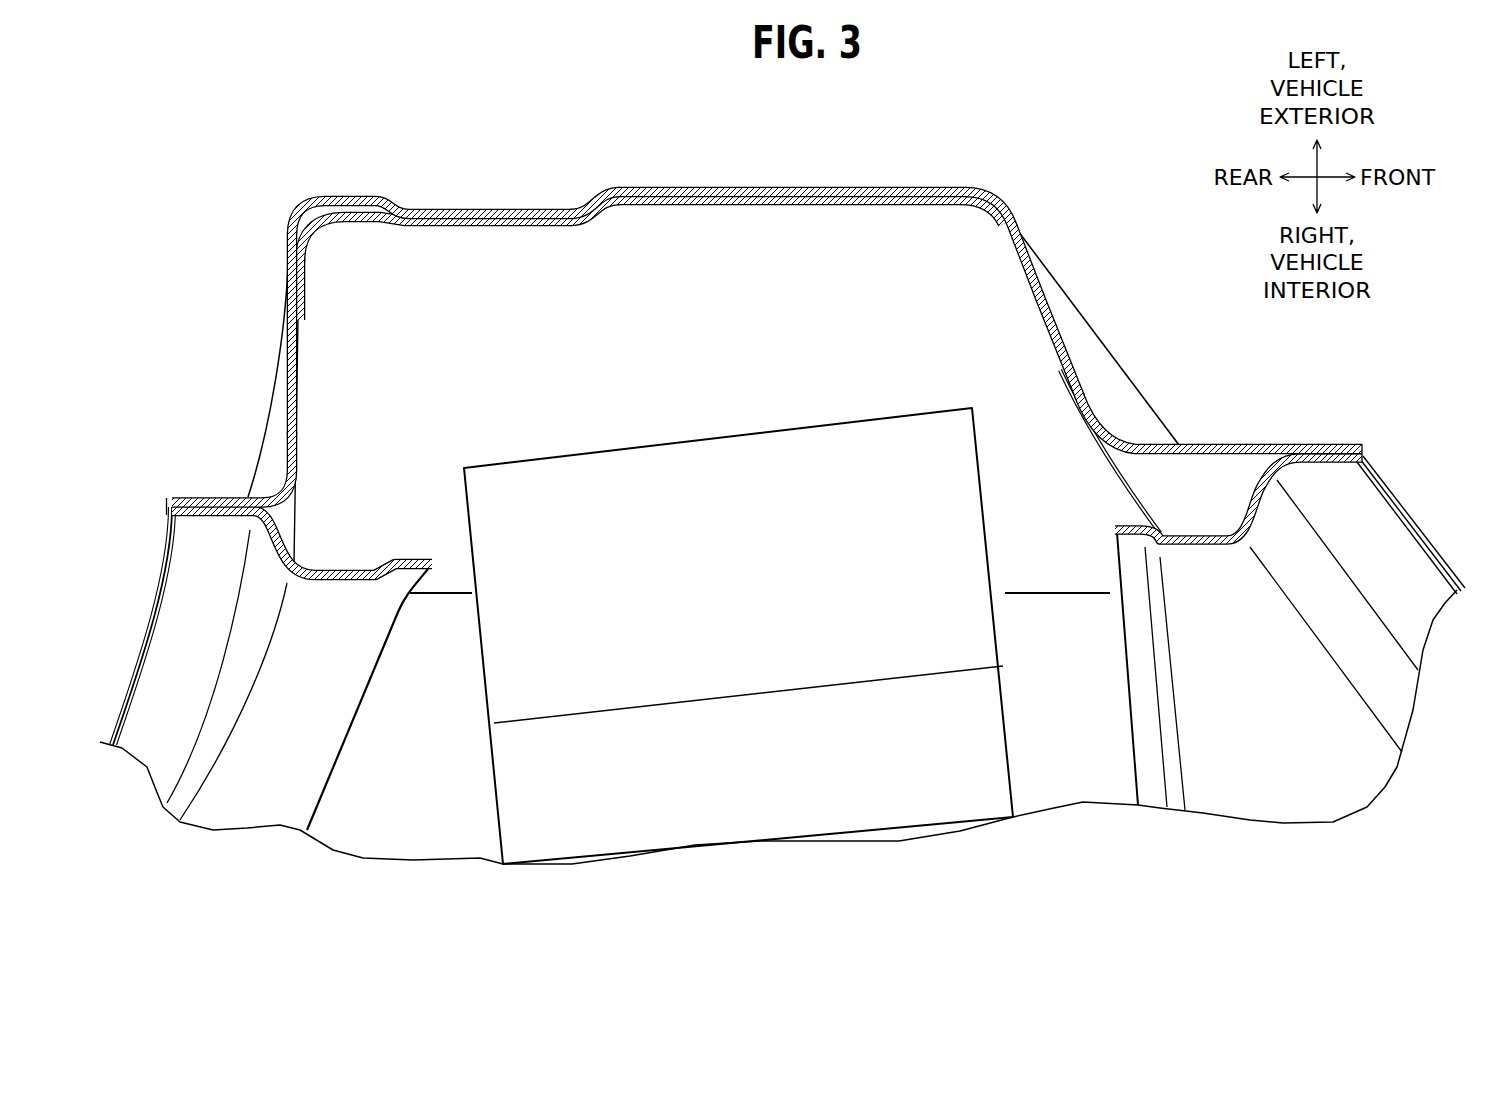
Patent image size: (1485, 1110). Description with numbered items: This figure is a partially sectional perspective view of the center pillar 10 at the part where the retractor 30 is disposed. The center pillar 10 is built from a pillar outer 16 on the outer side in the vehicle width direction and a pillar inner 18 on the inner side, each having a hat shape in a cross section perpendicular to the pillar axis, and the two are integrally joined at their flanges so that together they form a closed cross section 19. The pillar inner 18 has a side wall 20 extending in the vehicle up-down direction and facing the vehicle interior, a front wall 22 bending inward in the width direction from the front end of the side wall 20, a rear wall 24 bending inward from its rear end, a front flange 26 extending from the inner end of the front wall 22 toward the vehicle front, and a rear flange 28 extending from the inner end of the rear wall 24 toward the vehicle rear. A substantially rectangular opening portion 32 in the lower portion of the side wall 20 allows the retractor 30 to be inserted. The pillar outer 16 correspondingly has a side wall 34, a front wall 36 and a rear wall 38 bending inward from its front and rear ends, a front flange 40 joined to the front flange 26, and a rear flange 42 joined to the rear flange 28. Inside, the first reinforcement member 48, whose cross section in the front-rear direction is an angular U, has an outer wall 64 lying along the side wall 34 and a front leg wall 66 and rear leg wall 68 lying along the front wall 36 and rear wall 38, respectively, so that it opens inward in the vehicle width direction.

The center pillar 10 is at (927, 141).
The pillar outer 16 is at (685, 174).
The pillar inner 18 is at (251, 848).
The closed cross section 19 is at (635, 362).
The side wall 20 is at (320, 725).
The front wall 22 is at (1393, 695).
The rear wall 24 is at (248, 645).
The front flange 26 is at (1350, 474).
The rear flange 28 is at (175, 524).
The retractor 30 is at (776, 406).
The opening portion 32 is at (1133, 772).
The side wall 34 is at (605, 190).
The front wall 36 is at (1047, 298).
The rear wall 38 is at (286, 345).
The front flange 40 is at (1322, 445).
The rear flange 42 is at (208, 497).
The first reinforcement member 48 is at (699, 219).
The outer wall 64 is at (592, 224).
The front leg wall 66 is at (1035, 322).
The rear leg wall 68 is at (305, 297).